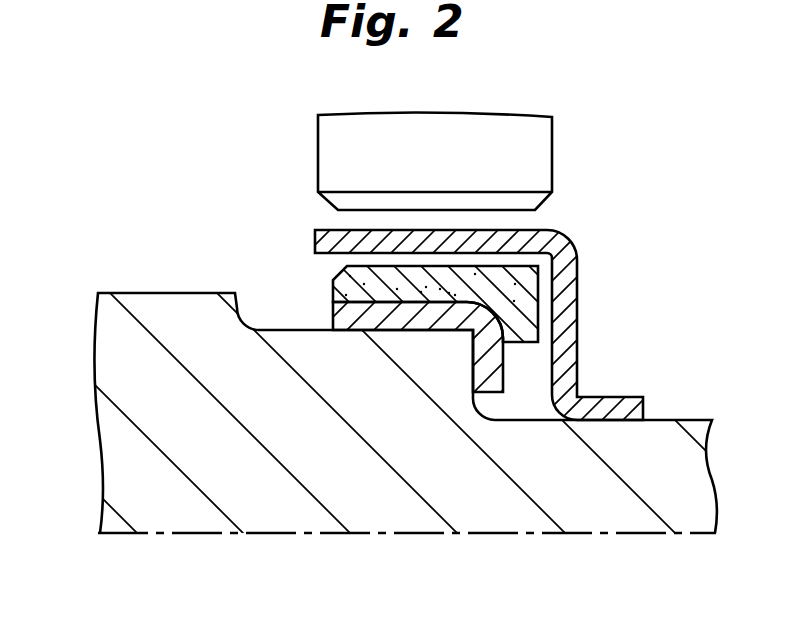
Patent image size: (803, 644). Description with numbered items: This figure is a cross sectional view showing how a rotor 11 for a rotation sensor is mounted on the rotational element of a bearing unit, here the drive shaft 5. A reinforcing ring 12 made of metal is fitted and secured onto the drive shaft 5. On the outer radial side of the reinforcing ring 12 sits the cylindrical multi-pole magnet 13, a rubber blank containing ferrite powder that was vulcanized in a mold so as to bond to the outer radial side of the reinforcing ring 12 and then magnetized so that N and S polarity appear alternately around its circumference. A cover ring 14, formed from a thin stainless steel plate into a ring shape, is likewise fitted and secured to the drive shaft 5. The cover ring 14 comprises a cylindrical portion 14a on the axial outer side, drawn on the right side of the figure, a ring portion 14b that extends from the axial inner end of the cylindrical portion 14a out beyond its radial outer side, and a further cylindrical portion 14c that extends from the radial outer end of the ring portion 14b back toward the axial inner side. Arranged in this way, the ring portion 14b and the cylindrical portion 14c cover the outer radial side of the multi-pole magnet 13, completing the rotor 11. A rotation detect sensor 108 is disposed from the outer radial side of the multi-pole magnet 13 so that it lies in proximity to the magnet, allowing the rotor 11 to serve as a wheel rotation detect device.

The rotation detect sensor 108 is at (535, 162).
The cover ring 14 is at (560, 253).
The cylindrical portion 14a is at (617, 407).
The ring portion 14b is at (560, 358).
The cylindrical portion 14c is at (543, 228).
The rotor for the rotation sensor 11 is at (588, 312).
The cylindrical multi-pole magnet 13 is at (337, 277).
The reinforcing ring 12 is at (393, 317).
The drive shaft 5 is at (487, 493).